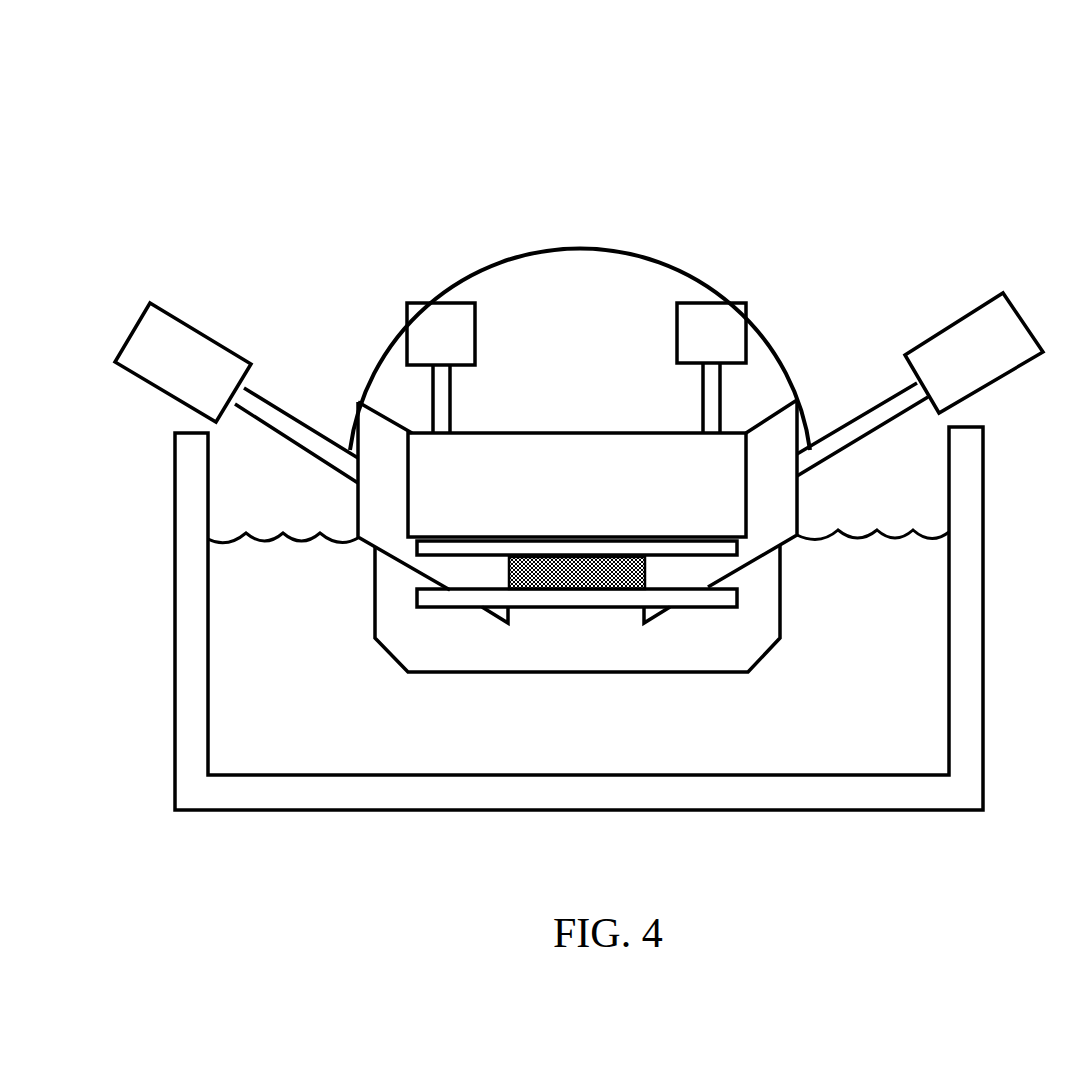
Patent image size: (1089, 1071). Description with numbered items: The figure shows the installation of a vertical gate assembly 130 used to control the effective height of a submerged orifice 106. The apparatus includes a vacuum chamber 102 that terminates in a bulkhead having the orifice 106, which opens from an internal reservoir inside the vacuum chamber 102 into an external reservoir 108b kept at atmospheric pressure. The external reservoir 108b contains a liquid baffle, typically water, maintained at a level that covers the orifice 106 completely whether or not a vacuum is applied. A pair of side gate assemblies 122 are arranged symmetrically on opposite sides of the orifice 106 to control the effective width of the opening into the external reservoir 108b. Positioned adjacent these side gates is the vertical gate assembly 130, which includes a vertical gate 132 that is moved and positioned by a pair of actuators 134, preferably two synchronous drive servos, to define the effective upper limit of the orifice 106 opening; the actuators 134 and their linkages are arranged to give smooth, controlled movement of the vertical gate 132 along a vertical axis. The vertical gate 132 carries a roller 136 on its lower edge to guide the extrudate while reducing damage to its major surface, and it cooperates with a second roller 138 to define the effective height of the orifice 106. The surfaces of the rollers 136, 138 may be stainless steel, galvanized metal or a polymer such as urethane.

The vacuum chamber 102 is at (588, 460).
The orifice 106 is at (573, 593).
The external reservoir 108b is at (889, 603).
The side gate assembly 122 is at (847, 330).
The vertical gate assembly 130 is at (558, 262).
The vertical gate 132 is at (728, 502).
The actuator 134 is at (712, 332).
The roller 136 is at (499, 547).
The roller 138 is at (444, 600).